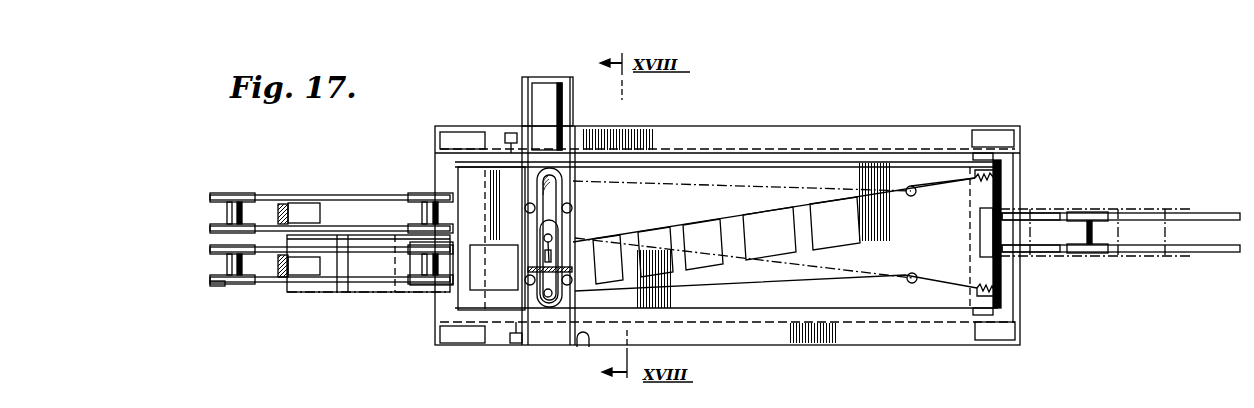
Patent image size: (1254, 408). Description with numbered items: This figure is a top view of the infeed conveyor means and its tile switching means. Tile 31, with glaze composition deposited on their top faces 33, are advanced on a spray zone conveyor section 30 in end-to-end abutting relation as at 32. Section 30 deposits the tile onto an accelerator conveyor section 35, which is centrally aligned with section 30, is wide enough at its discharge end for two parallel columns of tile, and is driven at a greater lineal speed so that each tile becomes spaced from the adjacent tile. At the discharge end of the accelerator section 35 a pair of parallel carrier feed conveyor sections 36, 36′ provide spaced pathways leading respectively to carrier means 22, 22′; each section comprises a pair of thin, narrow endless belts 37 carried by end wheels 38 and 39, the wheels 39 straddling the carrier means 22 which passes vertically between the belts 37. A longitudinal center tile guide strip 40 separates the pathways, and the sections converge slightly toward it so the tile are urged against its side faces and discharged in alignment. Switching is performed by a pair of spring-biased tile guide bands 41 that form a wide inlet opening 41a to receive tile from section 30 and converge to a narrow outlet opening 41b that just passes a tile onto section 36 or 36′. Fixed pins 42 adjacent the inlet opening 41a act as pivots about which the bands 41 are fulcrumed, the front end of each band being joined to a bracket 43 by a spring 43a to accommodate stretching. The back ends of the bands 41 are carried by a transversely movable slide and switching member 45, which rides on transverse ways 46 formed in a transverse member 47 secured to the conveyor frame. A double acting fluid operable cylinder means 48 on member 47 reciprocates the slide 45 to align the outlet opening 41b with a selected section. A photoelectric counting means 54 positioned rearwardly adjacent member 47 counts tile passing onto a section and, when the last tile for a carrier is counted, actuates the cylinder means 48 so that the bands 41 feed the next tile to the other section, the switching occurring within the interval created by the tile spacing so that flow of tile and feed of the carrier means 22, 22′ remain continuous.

The carrier means 22 is at (278, 270).
The carrier means 22′ is at (280, 205).
The spray zone conveyor section 30 is at (1090, 220).
The tile 31 is at (862, 249).
The end-to-end abutting relation 32 is at (1122, 225).
The top faces 33 is at (1045, 230).
The accelerator conveyor section 35 is at (810, 126).
The carrier feed conveyor section 36 is at (283, 292).
The carrier feed conveyor section 36′ is at (285, 202).
The endless belts 37 is at (318, 292).
The end wheels 38 is at (420, 285).
The end wheels 39 is at (215, 268).
The center tile guide strip 40 is at (385, 234).
The tile guide bands 41 is at (790, 208).
The wide inlet opening 41a is at (975, 178).
The narrow outlet opening 41b is at (568, 238).
The fixed pins 42 is at (915, 196).
The bracket 43 is at (996, 177).
The spring 43a is at (993, 167).
The slide and switching member 45 is at (549, 303).
The transverse ways 46 is at (560, 190).
The transverse member 47 is at (584, 347).
The double acting fluid operable cylinder means 48 is at (538, 93).
The photoelectric counting means 54 is at (510, 133).